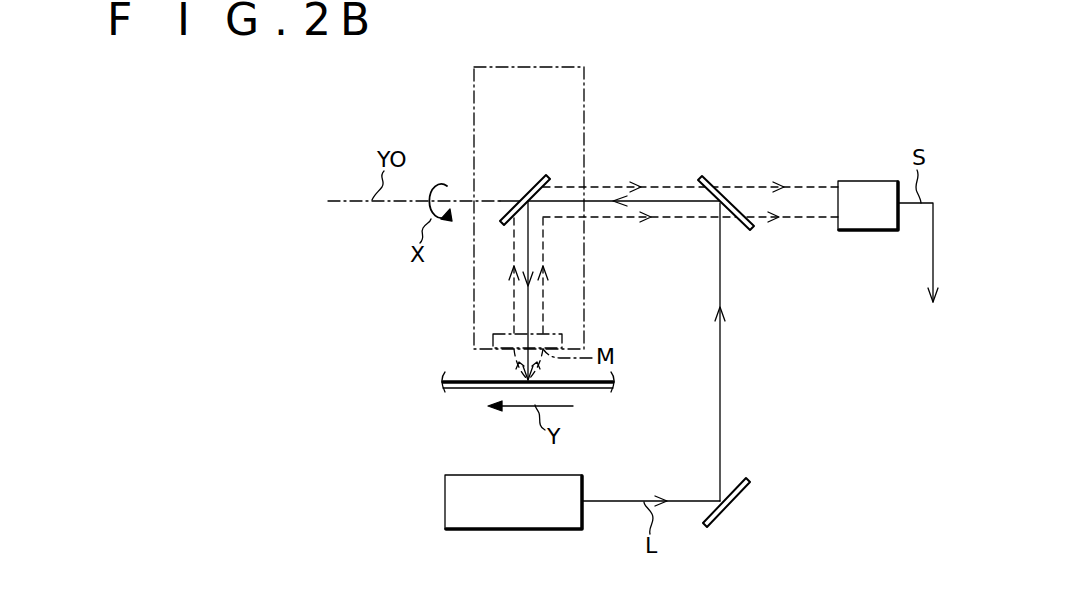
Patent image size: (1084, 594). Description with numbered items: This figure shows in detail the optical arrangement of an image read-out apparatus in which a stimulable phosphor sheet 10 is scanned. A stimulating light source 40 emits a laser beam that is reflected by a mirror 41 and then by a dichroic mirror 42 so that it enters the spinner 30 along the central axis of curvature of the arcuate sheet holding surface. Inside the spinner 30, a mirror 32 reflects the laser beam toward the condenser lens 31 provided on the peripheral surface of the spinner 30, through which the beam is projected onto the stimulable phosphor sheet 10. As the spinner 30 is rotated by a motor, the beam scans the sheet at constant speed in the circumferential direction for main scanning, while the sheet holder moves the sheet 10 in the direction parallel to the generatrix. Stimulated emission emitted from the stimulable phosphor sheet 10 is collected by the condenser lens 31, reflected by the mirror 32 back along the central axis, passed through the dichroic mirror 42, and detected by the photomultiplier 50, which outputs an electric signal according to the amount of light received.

The stimulable phosphor sheet 10 is at (602, 391).
The spinner 30 is at (590, 82).
The condenser lens 31 is at (497, 350).
The mirror 32 is at (539, 178).
The stimulating light source 40 is at (582, 478).
The mirror 41 is at (750, 486).
The dichroic mirror 42 is at (710, 181).
The photomultiplier 50 is at (874, 228).